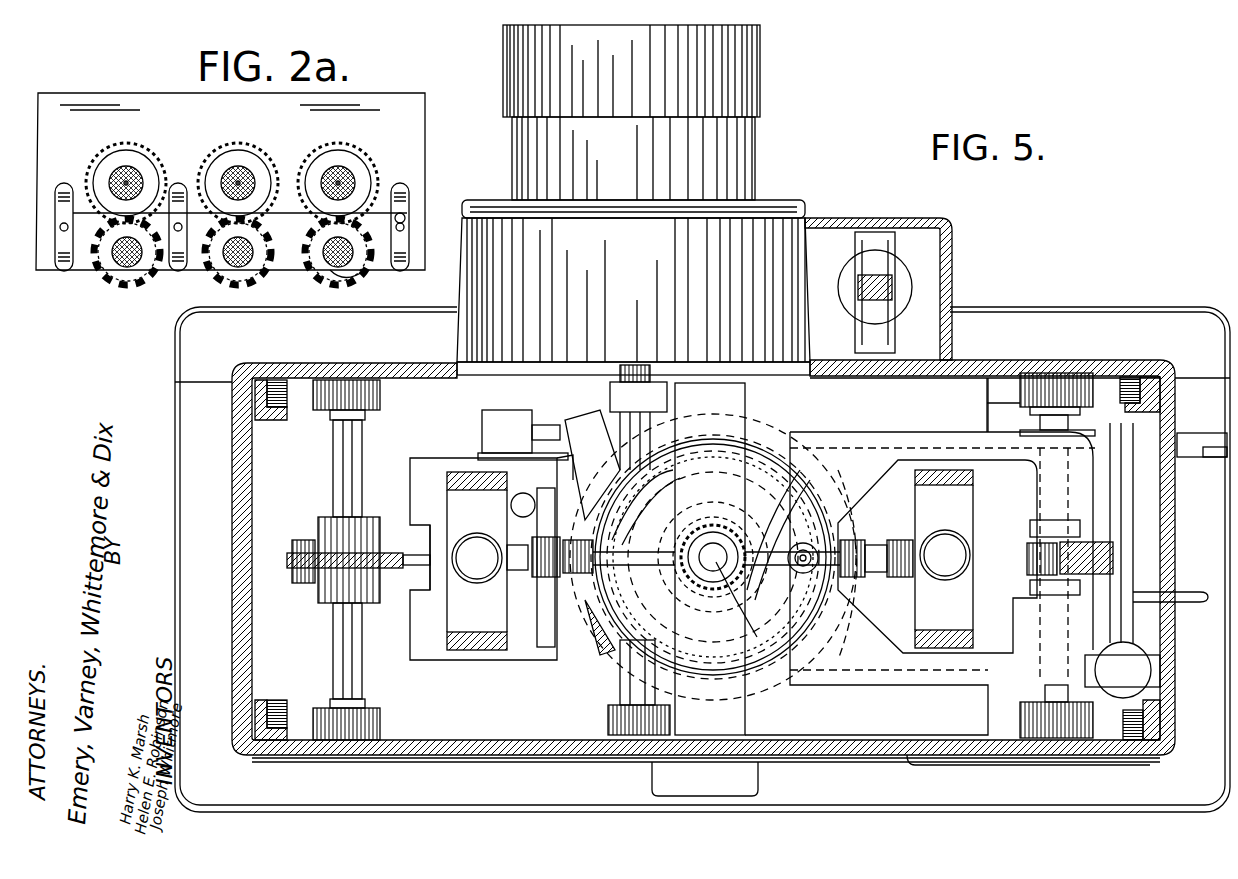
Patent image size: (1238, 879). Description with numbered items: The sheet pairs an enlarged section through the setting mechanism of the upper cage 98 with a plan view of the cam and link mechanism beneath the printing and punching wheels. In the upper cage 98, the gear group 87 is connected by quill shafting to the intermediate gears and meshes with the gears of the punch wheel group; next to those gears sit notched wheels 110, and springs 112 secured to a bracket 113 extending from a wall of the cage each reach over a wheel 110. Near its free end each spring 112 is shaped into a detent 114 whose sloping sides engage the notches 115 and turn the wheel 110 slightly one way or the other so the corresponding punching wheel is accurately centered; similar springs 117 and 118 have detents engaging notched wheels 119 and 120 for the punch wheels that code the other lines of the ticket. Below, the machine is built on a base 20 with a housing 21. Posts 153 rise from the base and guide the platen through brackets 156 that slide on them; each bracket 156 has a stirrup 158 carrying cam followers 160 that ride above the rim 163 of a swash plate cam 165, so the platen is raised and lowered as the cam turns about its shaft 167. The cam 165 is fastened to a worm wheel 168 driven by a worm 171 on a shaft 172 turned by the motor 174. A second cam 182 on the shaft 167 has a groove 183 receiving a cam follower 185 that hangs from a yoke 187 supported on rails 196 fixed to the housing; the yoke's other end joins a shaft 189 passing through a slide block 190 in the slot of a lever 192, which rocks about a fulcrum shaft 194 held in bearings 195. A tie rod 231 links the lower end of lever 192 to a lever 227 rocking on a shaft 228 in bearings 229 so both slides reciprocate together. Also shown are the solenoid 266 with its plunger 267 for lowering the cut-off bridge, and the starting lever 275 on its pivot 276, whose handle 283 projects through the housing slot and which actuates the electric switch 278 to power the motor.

In FIG. 2A, the upper cage 98 is at (368, 100).
In FIG. 2A, the spring 117 is at (150, 182).
In FIG. 2A, the spring 118 is at (207, 180).
In FIG. 2A, the gear group 87 is at (345, 160).
In FIG. 2A, the spring 112 is at (410, 193).
In FIG. 2A, the bracket 113 is at (412, 215).
In FIG. 2A, the detent 114 is at (240, 222).
In FIG. 2A, the notched wheel 119 is at (115, 285).
In FIG. 2A, the notched wheel 120 is at (225, 287).
In FIG. 2A, the notch 115 is at (320, 282).
In FIG. 2A, the notched wheel 110 is at (362, 282).
In FIG. 5, the motor 174 is at (755, 60).
In FIG. 5, the plunger 267 is at (900, 270).
In FIG. 5, the solenoid 266 is at (905, 287).
In FIG. 5, the base 20 is at (1160, 307).
In FIG. 5, the housing 21 is at (240, 550).
In FIG. 5, the bearing 229 is at (380, 395).
In FIG. 5, the shaft 228 is at (360, 460).
In FIG. 5, the lever 227 is at (378, 560).
In FIG. 5, the tie rod 231 is at (410, 568).
In FIG. 5, the electric switch 278 is at (505, 412).
In FIG. 5, the shaft 172 is at (600, 430).
In FIG. 5, the pivot 276 is at (515, 505).
In FIG. 5, the post 153 is at (477, 575).
In FIG. 5, the cam follower 160 is at (545, 580).
In FIG. 5, the bracket 156 is at (455, 650).
In FIG. 5, the stirrup 158 is at (527, 648).
In FIG. 5, the swash plate cam 165 is at (597, 655).
In FIG. 5, the rim 163 is at (620, 700).
In FIG. 5, the worm wheel 168 is at (762, 500).
In FIG. 5, the worm 171 is at (708, 590).
In FIG. 5, the shaft 167 is at (755, 608).
In FIG. 5, the groove 183 is at (668, 665).
In FIG. 5, the cam 182 is at (790, 688).
In FIG. 5, the cam follower 185 is at (850, 625).
In FIG. 5, the yoke 187 is at (840, 680).
In FIG. 5, the slide block 190 is at (1035, 575).
In FIG. 5, the shaft 189 is at (1060, 595).
In FIG. 5, the lever 192 is at (1115, 555).
In FIG. 5, the fulcrum shaft 194 is at (1045, 695).
In FIG. 5, the bearing 195 is at (1070, 372).
In FIG. 5, the starting lever 275 is at (1012, 405).
In FIG. 5, the rail 196 is at (975, 400).
In FIG. 5, the handle 283 is at (1197, 432).